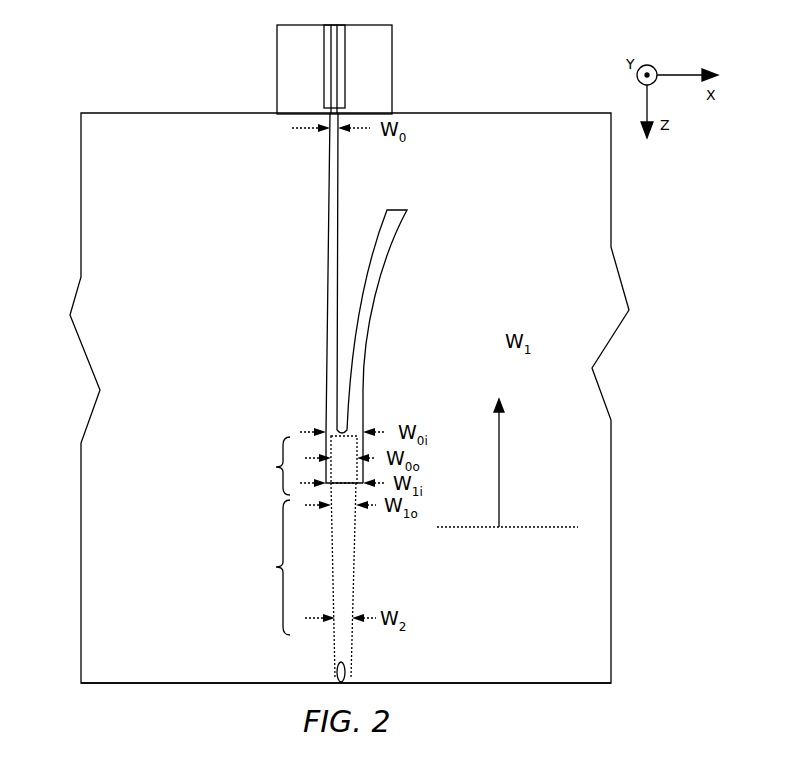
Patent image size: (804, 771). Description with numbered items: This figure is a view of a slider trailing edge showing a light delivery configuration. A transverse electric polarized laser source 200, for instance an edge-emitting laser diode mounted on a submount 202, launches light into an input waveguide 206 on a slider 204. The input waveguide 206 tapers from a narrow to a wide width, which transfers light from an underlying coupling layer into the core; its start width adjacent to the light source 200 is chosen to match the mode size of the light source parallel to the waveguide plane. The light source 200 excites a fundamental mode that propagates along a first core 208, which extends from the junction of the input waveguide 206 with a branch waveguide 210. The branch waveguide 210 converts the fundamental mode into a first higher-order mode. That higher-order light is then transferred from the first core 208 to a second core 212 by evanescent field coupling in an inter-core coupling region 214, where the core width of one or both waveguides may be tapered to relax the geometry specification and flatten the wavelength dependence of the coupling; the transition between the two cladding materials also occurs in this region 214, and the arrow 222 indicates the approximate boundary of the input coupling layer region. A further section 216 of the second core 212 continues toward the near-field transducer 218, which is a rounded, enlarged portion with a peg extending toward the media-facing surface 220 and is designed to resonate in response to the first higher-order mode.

The laser source 200 is at (322, 52).
The submount 202 is at (390, 48).
The slider 204 is at (95, 114).
The input waveguide 206 is at (331, 195).
The first core 208 is at (325, 440).
The branch waveguide 210 is at (397, 237).
The second core 212 is at (355, 541).
The inter-core coupling region 214 is at (259, 466).
The second slot section 216 is at (257, 567).
The near-field transducer 218 is at (335, 670).
The media-facing surface 220 is at (155, 685).
The arrow 222 is at (499, 467).